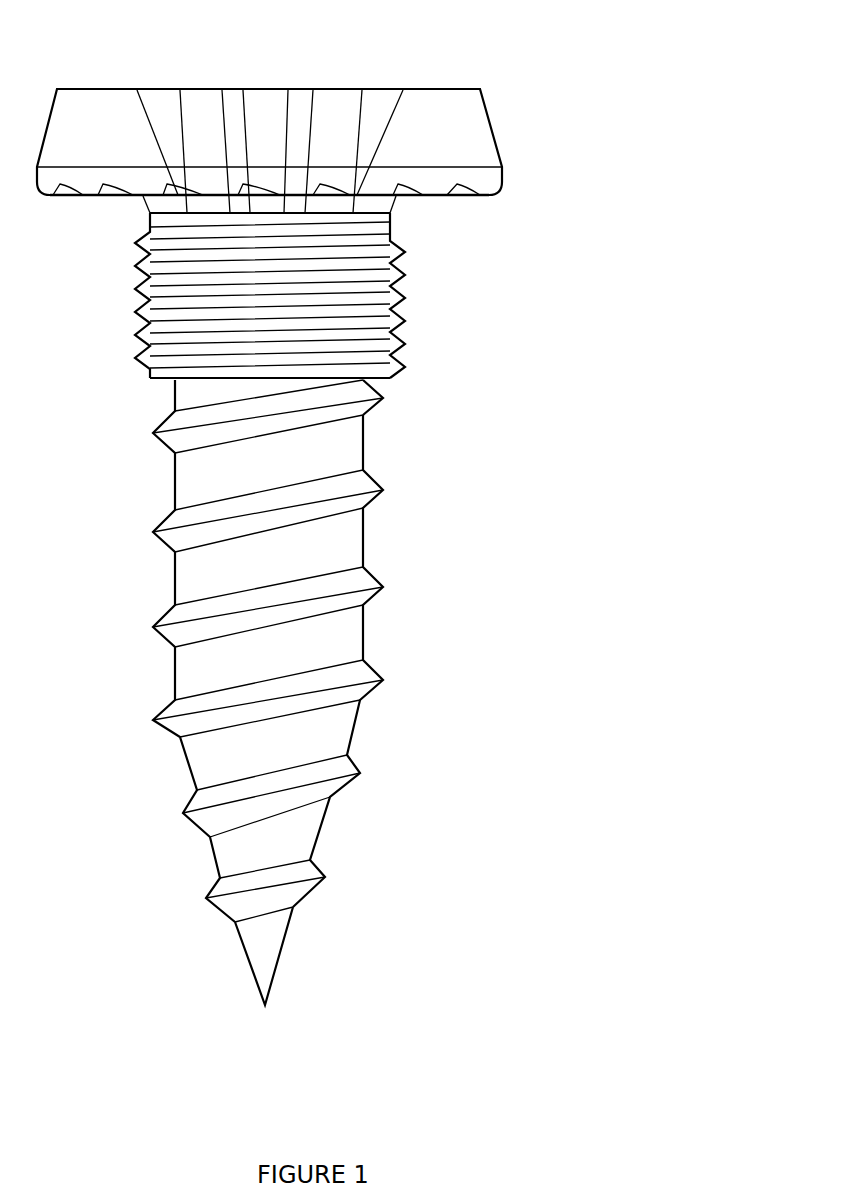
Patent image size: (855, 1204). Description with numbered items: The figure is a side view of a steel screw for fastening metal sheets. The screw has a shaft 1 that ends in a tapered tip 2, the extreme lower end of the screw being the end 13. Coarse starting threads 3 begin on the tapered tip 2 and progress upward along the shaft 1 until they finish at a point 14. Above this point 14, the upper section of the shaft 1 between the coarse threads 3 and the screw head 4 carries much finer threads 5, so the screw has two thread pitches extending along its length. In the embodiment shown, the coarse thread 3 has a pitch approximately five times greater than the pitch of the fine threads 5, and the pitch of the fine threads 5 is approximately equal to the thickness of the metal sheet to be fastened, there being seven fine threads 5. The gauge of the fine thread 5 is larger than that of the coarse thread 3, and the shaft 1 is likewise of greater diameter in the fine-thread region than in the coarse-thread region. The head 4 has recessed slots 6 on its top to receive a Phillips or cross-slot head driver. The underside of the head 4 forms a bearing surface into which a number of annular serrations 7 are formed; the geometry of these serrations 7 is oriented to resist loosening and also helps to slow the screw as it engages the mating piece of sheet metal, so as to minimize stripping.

The shaft 1 is at (363, 540).
The tapered tip 2 is at (327, 832).
The coarse starting threads 3 is at (129, 434).
The screw head 4 is at (475, 138).
The fine threads 5 is at (113, 242).
The recessed slots 6 is at (403, 76).
The annular serrations 7 is at (435, 200).
The end 13 is at (270, 1005).
The point 14 is at (385, 386).